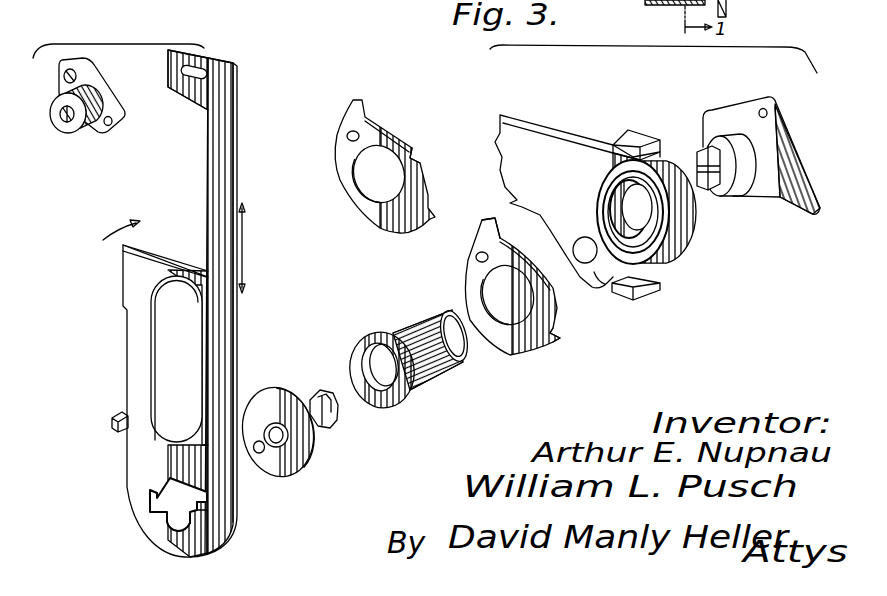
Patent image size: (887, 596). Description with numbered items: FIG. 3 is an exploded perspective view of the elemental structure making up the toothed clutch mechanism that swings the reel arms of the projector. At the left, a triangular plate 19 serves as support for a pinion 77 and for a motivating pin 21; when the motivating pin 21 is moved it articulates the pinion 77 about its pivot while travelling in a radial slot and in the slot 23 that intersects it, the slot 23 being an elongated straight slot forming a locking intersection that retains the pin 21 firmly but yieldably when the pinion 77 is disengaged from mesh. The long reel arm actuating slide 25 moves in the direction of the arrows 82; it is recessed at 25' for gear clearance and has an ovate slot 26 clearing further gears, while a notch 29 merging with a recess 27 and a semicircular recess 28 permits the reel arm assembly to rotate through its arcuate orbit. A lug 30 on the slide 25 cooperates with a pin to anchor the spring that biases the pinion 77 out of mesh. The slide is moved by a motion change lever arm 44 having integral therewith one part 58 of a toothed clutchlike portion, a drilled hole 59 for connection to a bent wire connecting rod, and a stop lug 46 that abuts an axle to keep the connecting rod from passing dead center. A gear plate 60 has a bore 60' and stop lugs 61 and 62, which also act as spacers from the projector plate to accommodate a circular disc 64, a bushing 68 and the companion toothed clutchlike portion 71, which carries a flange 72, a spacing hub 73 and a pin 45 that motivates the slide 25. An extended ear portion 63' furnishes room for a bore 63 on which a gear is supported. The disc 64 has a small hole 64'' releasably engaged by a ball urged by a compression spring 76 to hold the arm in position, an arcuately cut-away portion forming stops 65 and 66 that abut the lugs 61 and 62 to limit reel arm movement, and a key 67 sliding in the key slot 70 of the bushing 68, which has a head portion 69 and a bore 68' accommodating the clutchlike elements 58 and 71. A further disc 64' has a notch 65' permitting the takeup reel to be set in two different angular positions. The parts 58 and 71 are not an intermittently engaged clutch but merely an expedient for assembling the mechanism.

The triangular plate 19 is at (97, 84).
The motivating pin 21 is at (127, 110).
The slot 23 is at (238, 76).
The reel arm actuating slide 25 is at (180, 303).
The recess 25' is at (106, 236).
The ovate slot 26 is at (190, 343).
The recess 27 is at (198, 502).
The semicircular recess 28 is at (170, 527).
The notch 29 is at (150, 502).
The lug 30 is at (118, 417).
The motion change lever arm 44 is at (722, 107).
The pin 45 is at (260, 454).
The stop lug 46 is at (820, 186).
The toothed clutchlike portion 58 is at (728, 192).
The drilled hole 59 is at (770, 110).
The gear plate 60 is at (601, 204).
The bore 60' is at (646, 183).
The stop lug 61 is at (636, 128).
The stop lug 62 is at (645, 302).
The bore 63 is at (584, 278).
The extended ear portion 63' is at (592, 305).
The circular disc 64 is at (513, 301).
The disc 64' is at (368, 167).
The small hole 64'' is at (385, 196).
The stop 65 is at (481, 212).
The notch 65' is at (430, 139).
The stop 66 is at (556, 336).
The key 67 is at (500, 273).
The bushing 68 is at (422, 337).
The bore 68' is at (382, 384).
The head portion 69 is at (358, 347).
The key slot 70 is at (450, 310).
The companion toothed clutchlike portion 71 is at (330, 430).
The flange 72 is at (262, 390).
The spacing hub 73 is at (272, 470).
The compression spring 76 is at (72, 124).
The pinion 77 is at (51, 112).
The arrows 82 is at (247, 258).